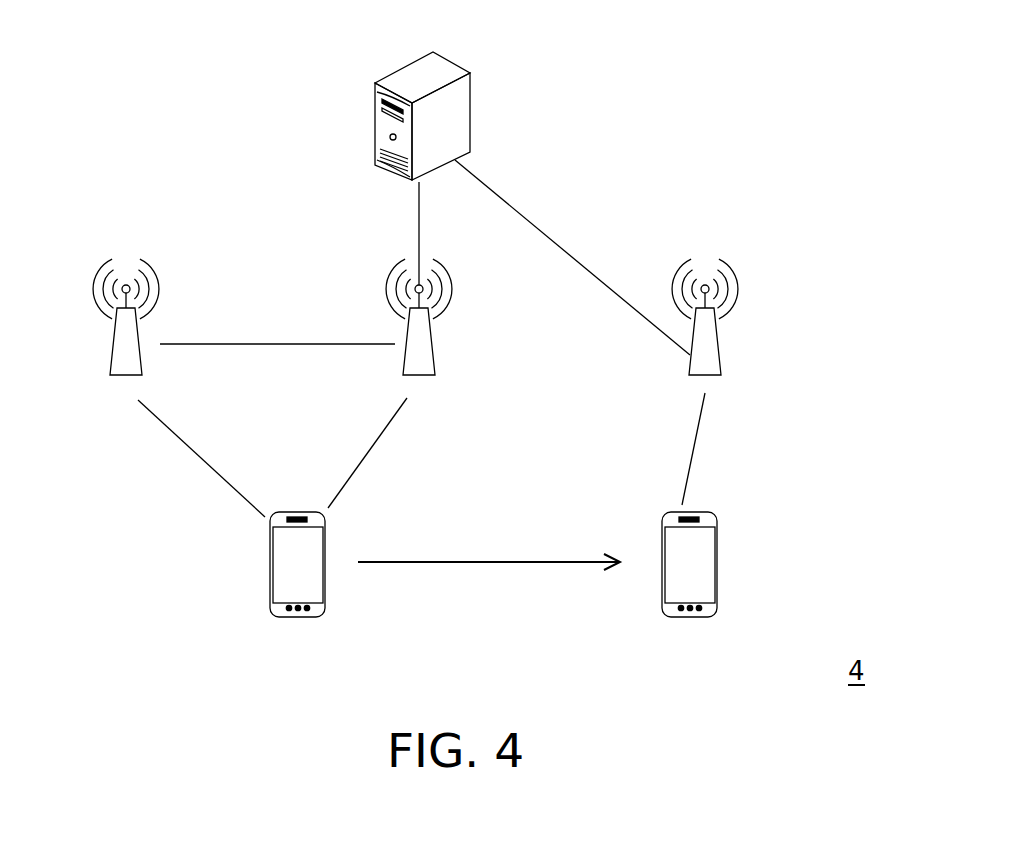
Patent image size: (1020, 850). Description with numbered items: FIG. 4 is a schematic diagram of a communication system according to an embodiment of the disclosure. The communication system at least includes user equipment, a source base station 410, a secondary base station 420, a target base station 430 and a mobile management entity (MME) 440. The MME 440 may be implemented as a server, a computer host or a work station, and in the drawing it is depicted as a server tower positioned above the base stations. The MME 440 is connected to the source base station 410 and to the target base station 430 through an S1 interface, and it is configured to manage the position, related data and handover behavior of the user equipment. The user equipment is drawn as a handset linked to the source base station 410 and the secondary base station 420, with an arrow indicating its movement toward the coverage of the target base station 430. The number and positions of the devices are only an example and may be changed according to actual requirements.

The mobile management entity (MME) 440 is at (470, 127).
The secondary base station 420 is at (142, 367).
The source base station 410 is at (436, 357).
The target base station 430 is at (721, 357).